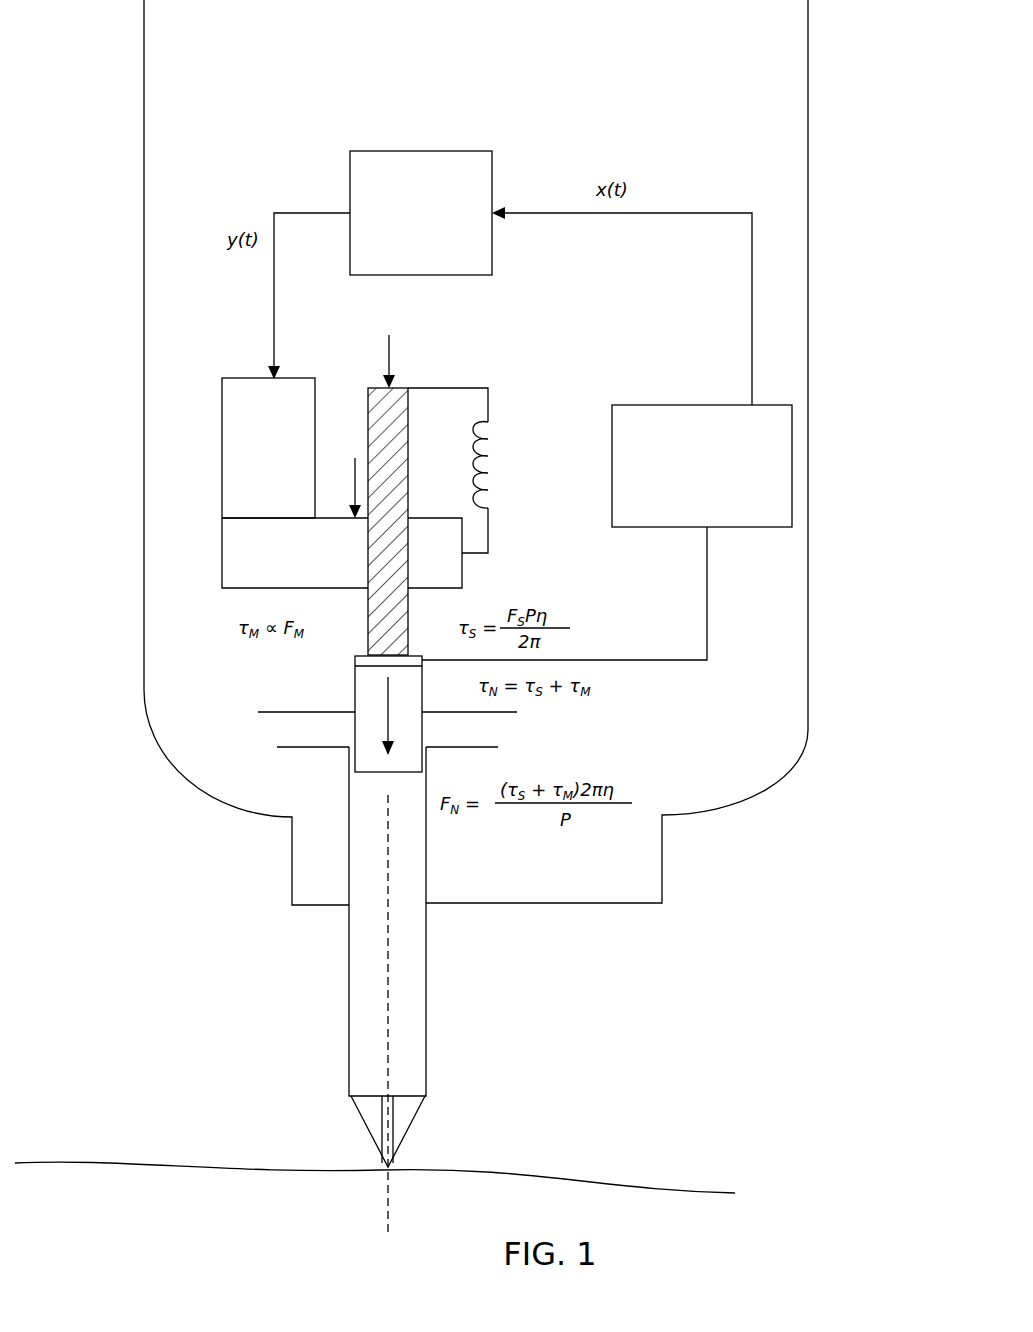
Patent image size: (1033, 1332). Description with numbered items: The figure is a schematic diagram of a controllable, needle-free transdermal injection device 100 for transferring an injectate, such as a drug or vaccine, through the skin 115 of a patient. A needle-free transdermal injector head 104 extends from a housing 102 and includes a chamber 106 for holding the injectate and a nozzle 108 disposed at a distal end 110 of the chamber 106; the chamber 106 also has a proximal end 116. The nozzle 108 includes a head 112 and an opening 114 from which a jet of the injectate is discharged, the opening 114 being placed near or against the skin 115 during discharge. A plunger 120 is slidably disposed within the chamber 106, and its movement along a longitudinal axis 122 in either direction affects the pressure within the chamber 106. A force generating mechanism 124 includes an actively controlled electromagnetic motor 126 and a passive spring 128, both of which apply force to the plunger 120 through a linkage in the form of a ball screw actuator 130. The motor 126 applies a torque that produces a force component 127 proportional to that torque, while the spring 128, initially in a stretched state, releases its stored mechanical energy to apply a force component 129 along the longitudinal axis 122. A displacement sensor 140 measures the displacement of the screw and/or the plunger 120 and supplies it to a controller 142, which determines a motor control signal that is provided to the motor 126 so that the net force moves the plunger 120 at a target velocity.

The controllable, needle-free transdermal injection device 100 is at (178, 910).
The housing 102 is at (808, 735).
The needle-free transdermal injector head 104 is at (426, 982).
The chamber 106 is at (410, 948).
The nozzle 108 is at (423, 1103).
The distal end 110 is at (350, 1085).
The head 112 is at (360, 1117).
The opening 114 is at (393, 1170).
The skin 115 is at (240, 1170).
The proximal end 116 is at (349, 768).
The plunger 120 is at (355, 683).
The longitudinal axis 122 is at (393, 1015).
The force generating mechanism 124 is at (504, 420).
The electromagnetic motor 126 is at (250, 378).
The force component 127 is at (355, 477).
The spring 128 is at (497, 493).
The force component 129 is at (389, 357).
The ball screw actuator 130 is at (368, 580).
The displacement sensor 140 is at (735, 527).
The controller 142 is at (403, 150).